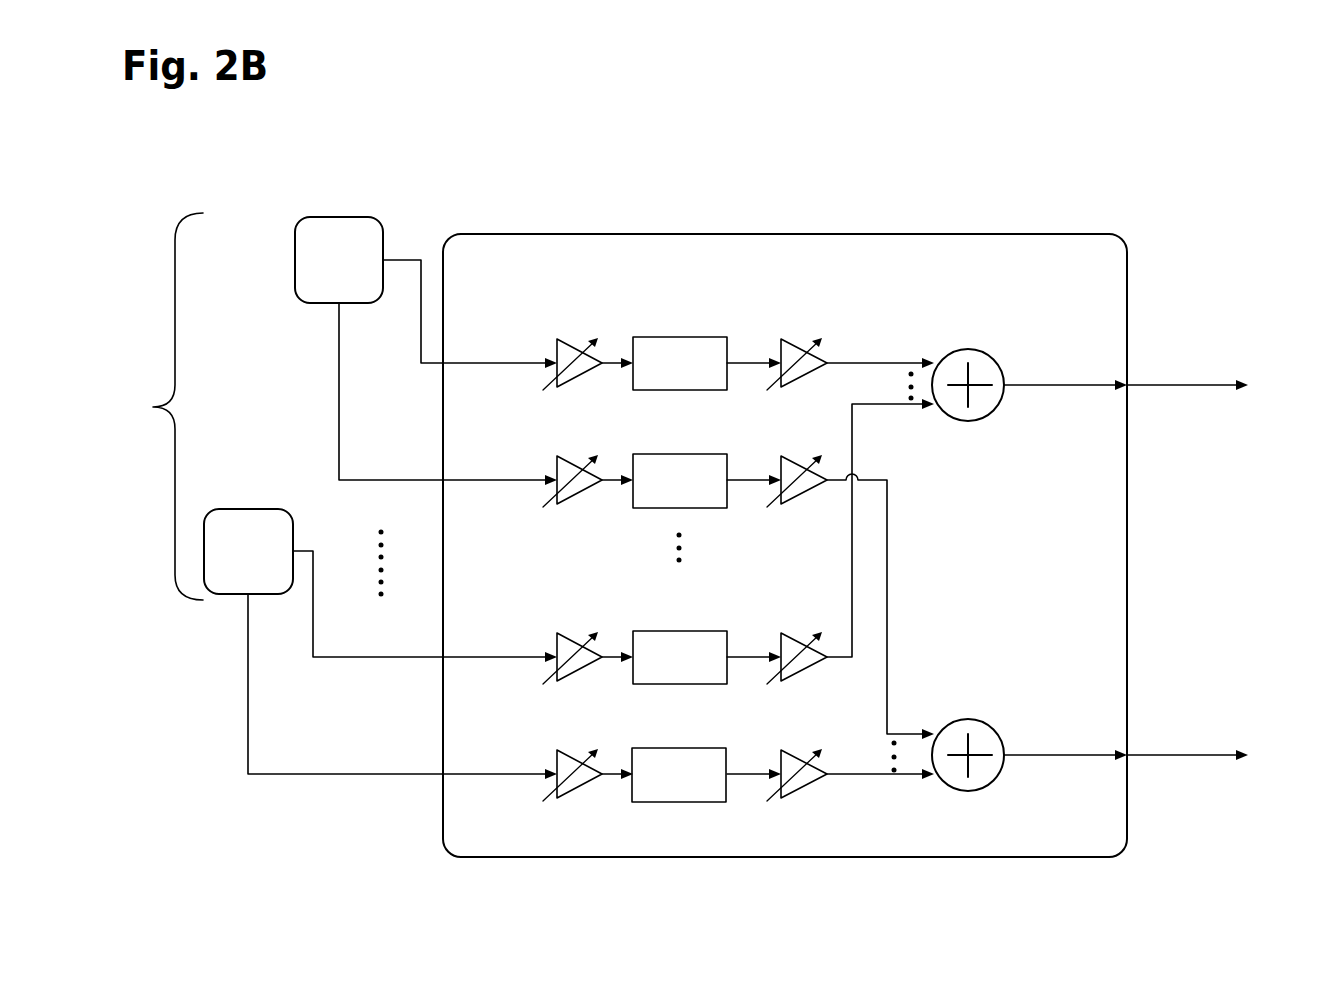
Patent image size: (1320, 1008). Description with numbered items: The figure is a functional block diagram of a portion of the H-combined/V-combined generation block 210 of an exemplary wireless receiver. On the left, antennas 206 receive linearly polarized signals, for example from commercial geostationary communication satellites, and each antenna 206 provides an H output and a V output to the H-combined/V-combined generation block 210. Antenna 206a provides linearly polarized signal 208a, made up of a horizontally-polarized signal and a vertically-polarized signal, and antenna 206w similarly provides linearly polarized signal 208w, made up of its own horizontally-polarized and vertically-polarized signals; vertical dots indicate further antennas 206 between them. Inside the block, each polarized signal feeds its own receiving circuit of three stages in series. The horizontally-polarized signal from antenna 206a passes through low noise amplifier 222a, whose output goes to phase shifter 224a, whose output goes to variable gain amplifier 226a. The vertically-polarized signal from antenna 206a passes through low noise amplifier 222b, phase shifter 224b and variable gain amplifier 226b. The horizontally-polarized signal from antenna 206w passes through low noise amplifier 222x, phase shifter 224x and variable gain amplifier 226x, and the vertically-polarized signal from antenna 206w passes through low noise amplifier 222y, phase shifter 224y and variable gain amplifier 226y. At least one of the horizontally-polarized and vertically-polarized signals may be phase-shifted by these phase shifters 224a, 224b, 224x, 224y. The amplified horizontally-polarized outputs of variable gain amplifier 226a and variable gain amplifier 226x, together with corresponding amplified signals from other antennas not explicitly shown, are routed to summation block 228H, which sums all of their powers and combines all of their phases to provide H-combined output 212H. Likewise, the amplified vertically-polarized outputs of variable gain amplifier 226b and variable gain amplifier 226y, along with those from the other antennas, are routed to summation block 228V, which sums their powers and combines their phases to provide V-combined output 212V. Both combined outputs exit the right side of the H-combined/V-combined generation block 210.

The antennas 206 is at (153, 407).
The antenna 206a is at (339, 260).
The antenna 206w is at (248, 551).
The linearly polarized signal 208a is at (428, 364).
The linearly polarized signal 208w is at (403, 658).
The H-combined/V-combined generation block 210 is at (785, 545).
The low noise amplifier 222a is at (584, 342).
The low noise amplifier 222b is at (584, 459).
The low noise amplifier 222x is at (584, 635).
The low noise amplifier 222y is at (584, 754).
The phase shifter 224a is at (685, 336).
The phase shifter 224b is at (685, 452).
The phase shifter 224x is at (685, 629).
The phase shifter 224y is at (685, 746).
The variable gain amplifier 226a is at (803, 342).
The variable gain amplifier 226b is at (803, 459).
The variable gain amplifier 226x is at (803, 637).
The variable gain amplifier 226y is at (803, 754).
The summation block 228H is at (970, 349).
The summation block 228V is at (970, 719).
The H-combined output 212H is at (1211, 382).
The V-combined output 212V is at (1211, 752).